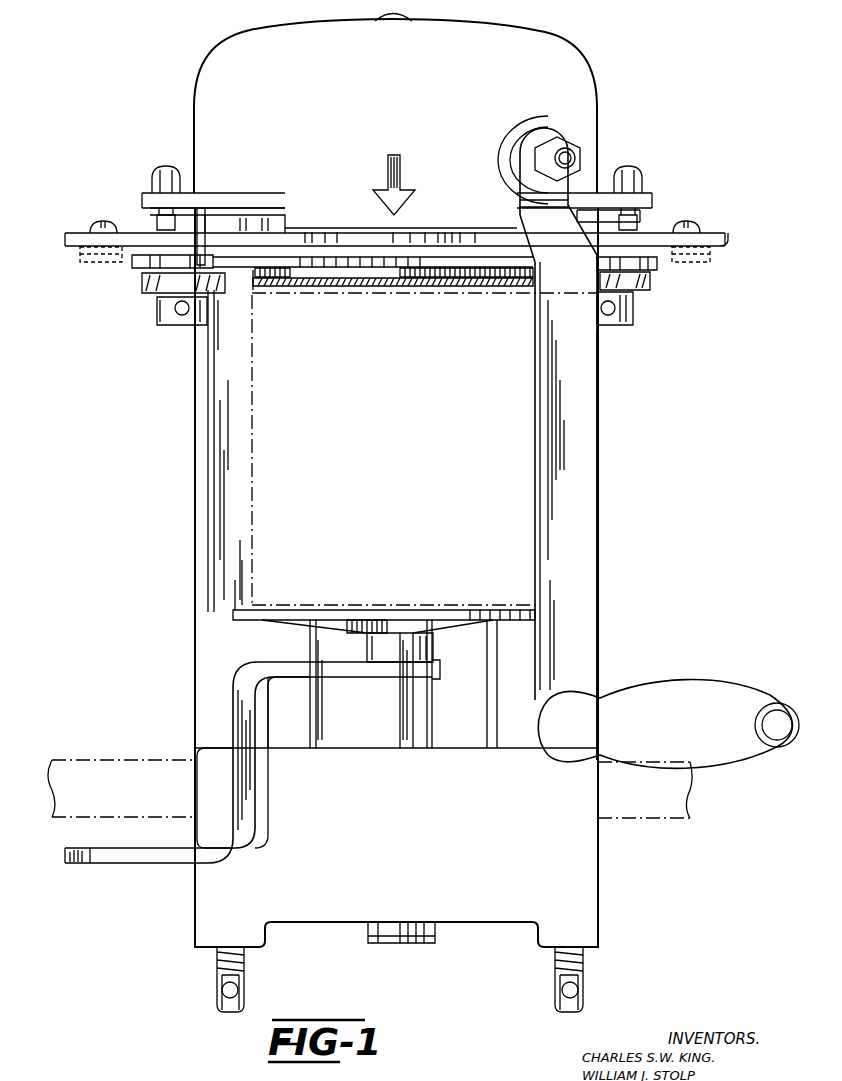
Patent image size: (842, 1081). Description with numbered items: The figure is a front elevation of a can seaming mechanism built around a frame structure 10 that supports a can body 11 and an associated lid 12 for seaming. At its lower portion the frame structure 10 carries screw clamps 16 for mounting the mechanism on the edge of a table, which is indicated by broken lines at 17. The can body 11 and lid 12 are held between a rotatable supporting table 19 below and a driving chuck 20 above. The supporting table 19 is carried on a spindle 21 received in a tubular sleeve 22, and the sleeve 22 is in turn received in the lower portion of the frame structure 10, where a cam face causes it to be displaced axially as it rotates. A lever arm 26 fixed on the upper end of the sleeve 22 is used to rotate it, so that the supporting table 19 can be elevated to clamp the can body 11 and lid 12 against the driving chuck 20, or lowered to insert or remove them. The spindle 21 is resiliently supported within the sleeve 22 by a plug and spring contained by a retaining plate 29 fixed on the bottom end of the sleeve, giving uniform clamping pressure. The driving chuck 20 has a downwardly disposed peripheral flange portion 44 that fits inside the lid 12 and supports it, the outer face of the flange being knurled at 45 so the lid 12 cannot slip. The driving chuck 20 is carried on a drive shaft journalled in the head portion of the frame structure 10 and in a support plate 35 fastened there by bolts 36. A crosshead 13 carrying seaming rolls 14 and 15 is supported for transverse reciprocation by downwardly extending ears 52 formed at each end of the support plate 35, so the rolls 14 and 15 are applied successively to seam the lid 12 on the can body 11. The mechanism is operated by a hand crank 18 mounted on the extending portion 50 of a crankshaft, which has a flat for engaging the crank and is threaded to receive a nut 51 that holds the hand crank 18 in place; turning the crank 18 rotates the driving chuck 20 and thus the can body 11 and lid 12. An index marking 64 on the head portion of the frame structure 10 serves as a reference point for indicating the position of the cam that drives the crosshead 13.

The frame structure 10 is at (194, 491).
The can body 11 is at (250, 392).
The lid 12 is at (250, 292).
The crosshead 13 is at (140, 258).
The seaming roll 14 is at (146, 290).
The seaming roll 15 is at (650, 290).
The screw clamps 16 is at (217, 966).
The table edge 17 is at (108, 760).
The hand crank 18 is at (598, 546).
The supporting table 19 is at (375, 610).
The driving chuck 20 is at (447, 272).
The spindle 21 is at (425, 656).
The tubular sleeve 22 is at (433, 717).
The lever arm 26 is at (285, 662).
The retaining plate 29 is at (395, 945).
The support plate 35 is at (150, 216).
The bolts 36 is at (166, 167).
The peripheral flange portion 44 is at (262, 288).
The knurled outer face 45 is at (335, 282).
The extending portion of crankshaft 50 is at (575, 158).
The nut 51 is at (562, 140).
The downwardly extending ears 52 is at (197, 236).
The index marking 64 is at (388, 180).